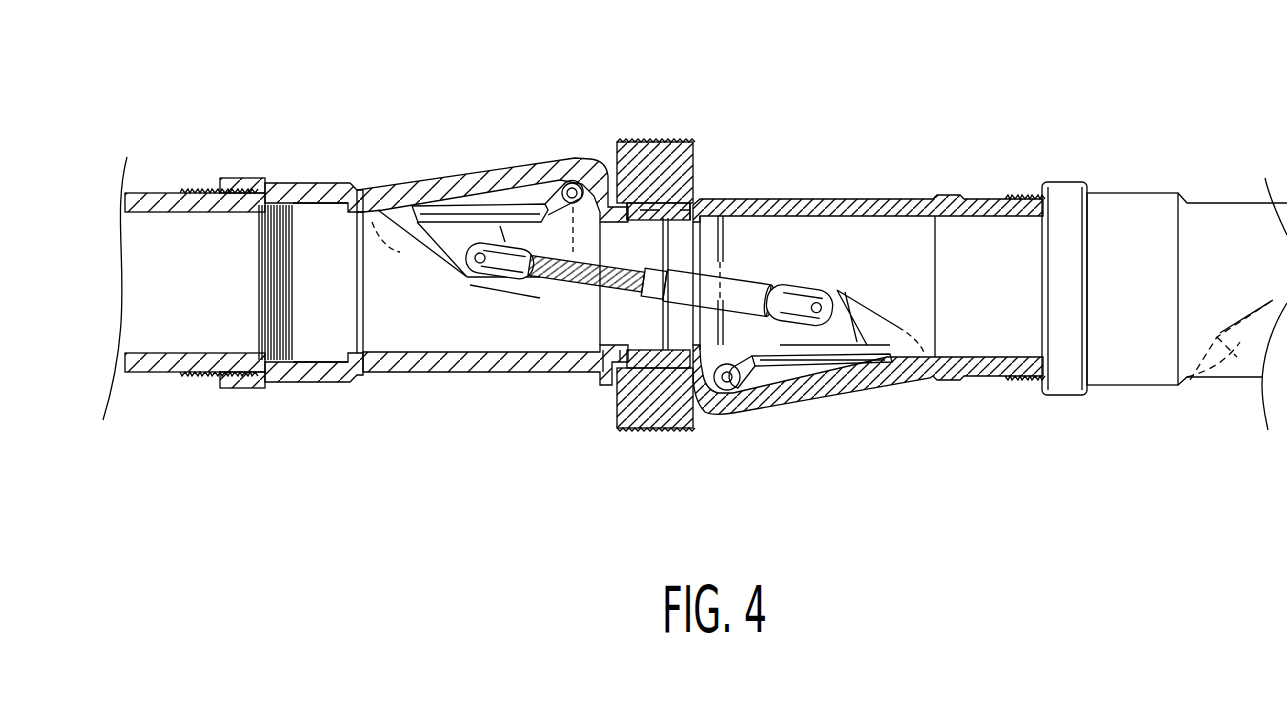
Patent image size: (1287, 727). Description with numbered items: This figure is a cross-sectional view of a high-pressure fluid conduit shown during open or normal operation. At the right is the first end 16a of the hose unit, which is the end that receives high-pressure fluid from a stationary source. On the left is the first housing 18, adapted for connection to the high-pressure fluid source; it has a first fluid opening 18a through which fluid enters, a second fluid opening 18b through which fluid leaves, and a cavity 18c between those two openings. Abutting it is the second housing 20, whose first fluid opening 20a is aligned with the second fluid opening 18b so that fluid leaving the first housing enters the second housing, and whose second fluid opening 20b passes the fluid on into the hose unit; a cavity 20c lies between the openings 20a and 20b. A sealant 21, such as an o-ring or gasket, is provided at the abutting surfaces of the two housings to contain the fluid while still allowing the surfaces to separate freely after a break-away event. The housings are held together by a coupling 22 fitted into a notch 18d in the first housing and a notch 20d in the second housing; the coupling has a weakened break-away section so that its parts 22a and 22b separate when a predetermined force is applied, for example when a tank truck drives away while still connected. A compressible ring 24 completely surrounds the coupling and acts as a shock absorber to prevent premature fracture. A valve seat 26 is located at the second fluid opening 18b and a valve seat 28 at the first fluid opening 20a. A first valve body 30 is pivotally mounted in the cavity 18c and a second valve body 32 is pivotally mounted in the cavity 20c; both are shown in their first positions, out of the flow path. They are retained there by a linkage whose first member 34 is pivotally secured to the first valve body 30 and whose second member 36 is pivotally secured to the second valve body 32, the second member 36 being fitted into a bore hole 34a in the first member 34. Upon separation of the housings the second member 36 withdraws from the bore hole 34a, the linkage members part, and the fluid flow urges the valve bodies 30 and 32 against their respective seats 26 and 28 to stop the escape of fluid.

The first end of hose unit 16a is at (1115, 193).
The first housing 18 is at (492, 270).
The first fluid opening 18a is at (363, 305).
The second fluid opening 18b is at (590, 350).
The cavity 18c is at (440, 324).
The notch 18d is at (618, 362).
The second housing 20 is at (866, 281).
The first fluid opening 20a is at (723, 253).
The second fluid opening 20b is at (1043, 214).
The cavity 20c is at (910, 273).
The notch 20d is at (688, 412).
The sealant 21 is at (670, 430).
The coupling 22 is at (680, 139).
The first part of coupling 22a is at (617, 168).
The second part of coupling 22b is at (697, 183).
The compressible ring 24 is at (650, 142).
The valve seat 26 is at (607, 322).
The valve seat 28 is at (649, 263).
The first valve body 30 is at (450, 206).
The second valve body 32 is at (833, 364).
The first member of linkage 34 is at (542, 290).
The bore hole 34a is at (540, 293).
The second member of linkage 36 is at (745, 284).